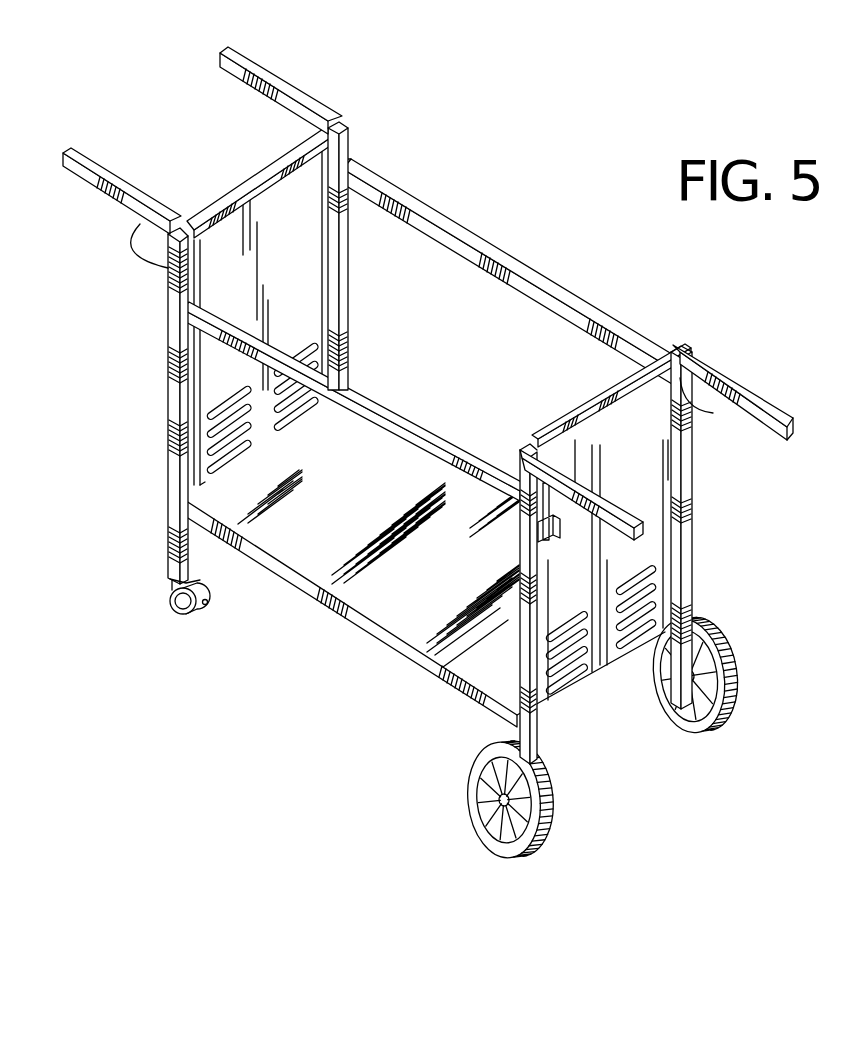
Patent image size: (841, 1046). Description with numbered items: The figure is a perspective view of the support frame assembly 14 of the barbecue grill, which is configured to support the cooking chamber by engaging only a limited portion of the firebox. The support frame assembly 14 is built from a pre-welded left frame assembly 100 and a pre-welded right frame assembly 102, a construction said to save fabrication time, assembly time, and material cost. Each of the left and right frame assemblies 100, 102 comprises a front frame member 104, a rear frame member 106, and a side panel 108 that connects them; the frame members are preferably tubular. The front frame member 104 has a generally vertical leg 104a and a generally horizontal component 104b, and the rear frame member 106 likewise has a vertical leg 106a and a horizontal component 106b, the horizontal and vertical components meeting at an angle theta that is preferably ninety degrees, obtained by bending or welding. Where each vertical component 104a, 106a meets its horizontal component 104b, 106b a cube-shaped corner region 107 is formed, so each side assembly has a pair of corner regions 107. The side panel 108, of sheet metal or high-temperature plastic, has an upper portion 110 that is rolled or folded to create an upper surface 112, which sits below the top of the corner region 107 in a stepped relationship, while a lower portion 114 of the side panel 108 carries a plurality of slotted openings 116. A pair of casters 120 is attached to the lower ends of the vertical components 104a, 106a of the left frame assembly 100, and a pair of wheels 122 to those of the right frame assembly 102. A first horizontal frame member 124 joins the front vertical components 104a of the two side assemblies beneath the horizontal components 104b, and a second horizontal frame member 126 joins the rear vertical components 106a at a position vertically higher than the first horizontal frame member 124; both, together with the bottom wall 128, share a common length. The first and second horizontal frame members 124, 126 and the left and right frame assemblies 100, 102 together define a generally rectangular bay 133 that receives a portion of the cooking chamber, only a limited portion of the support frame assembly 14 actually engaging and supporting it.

The support frame assembly 14 is at (604, 218).
The left frame assembly 100 is at (95, 250).
The right frame assembly 102 is at (758, 340).
The front frame member 104 is at (146, 326).
The front vertical component 104a is at (176, 475).
The front horizontal component 104b is at (130, 185).
The rear frame member 106 is at (240, 112).
The rear vertical component 106a is at (340, 322).
The rear horizontal component 106b is at (297, 90).
The corner region 107 is at (338, 120).
The side panel 108 is at (303, 272).
The upper portion of the side panel 110 is at (268, 220).
The upper surface 112 is at (263, 170).
The lower portion of the side panel 114 is at (260, 420).
The slotted openings 116 is at (303, 415).
The casters 120 is at (180, 610).
The wheels 122 is at (738, 708).
The first horizontal frame member 124 is at (382, 424).
The second horizontal frame member 126 is at (527, 273).
The bottom wall 128 is at (408, 590).
The bay 133 is at (468, 300).